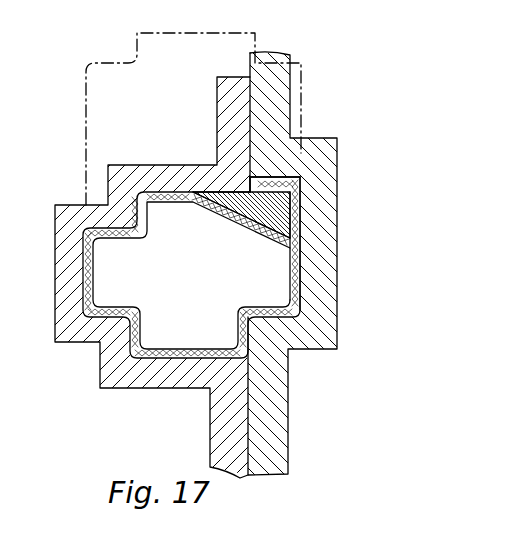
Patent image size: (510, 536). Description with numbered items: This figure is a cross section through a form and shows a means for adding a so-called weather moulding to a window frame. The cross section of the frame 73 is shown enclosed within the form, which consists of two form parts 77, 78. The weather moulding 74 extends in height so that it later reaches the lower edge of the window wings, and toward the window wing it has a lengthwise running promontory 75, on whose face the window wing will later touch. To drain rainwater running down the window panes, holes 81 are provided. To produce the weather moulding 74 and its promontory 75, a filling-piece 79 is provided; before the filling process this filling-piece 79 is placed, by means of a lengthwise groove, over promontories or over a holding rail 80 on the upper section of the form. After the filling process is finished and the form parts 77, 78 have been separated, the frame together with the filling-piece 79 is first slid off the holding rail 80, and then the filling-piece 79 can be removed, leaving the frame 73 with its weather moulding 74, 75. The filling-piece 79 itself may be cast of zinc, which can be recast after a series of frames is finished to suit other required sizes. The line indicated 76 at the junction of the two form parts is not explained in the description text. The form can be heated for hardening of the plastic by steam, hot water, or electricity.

The frame 73 is at (148, 355).
The weather moulding 74 is at (278, 183).
The promontory 75 is at (292, 179).
The joint between housing parts 76 is at (248, 176).
The form part 77 is at (75, 333).
The form part 78 is at (323, 316).
The filling-piece 79 is at (285, 210).
The holding rail 80 is at (302, 190).
The holes 81 is at (295, 232).